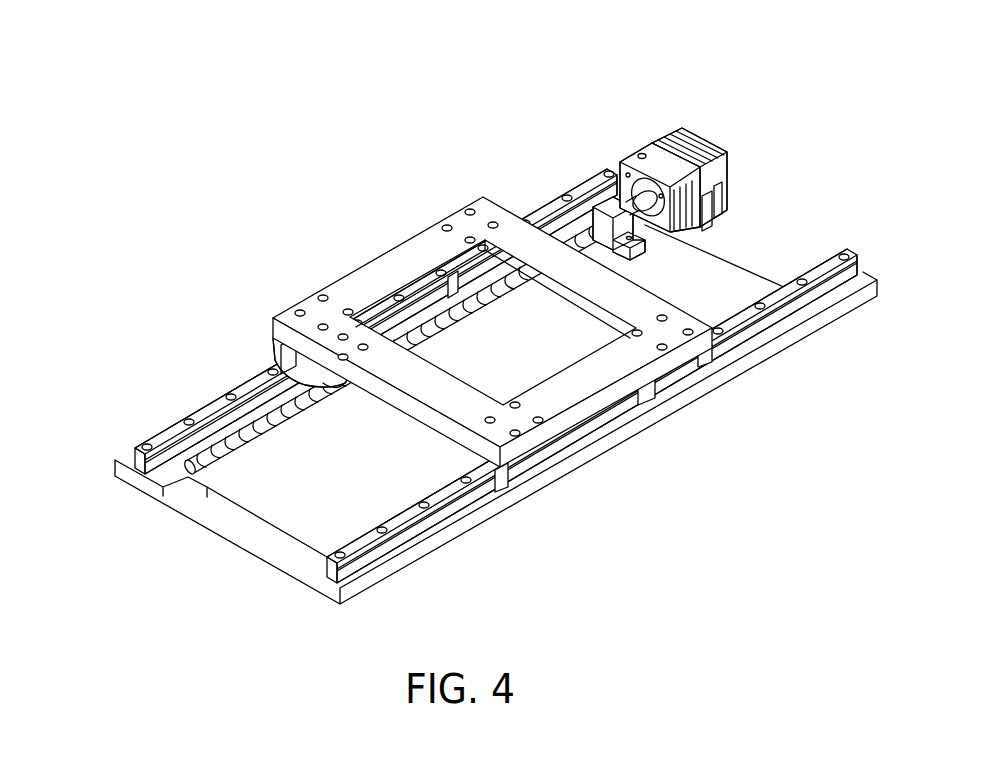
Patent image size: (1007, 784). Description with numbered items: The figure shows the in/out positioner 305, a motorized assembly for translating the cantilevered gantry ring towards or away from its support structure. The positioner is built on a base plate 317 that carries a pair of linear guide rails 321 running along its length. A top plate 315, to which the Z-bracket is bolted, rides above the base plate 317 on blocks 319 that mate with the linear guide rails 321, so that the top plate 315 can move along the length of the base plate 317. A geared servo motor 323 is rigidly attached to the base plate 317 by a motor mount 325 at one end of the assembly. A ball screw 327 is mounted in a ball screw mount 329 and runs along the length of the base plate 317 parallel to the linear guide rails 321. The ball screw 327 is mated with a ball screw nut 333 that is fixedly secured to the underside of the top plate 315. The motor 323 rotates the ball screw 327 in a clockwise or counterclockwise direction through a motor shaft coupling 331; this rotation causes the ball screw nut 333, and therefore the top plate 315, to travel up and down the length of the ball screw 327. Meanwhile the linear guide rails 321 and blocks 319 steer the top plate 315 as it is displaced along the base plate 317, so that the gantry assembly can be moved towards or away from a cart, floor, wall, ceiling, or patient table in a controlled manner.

The in/out positioner 305 is at (817, 62).
The top plate 315 is at (417, 247).
The base plate 317 is at (212, 500).
The blocks 319 is at (672, 377).
The linear guide rails 321 is at (482, 493).
The geared servo motor 323 is at (674, 142).
The motor mount 325 is at (619, 160).
The ball screw 327 is at (262, 377).
The ball screw mount 329 is at (582, 198).
The motor shaft coupling 331 is at (620, 183).
The ball screw nut 333 is at (270, 320).